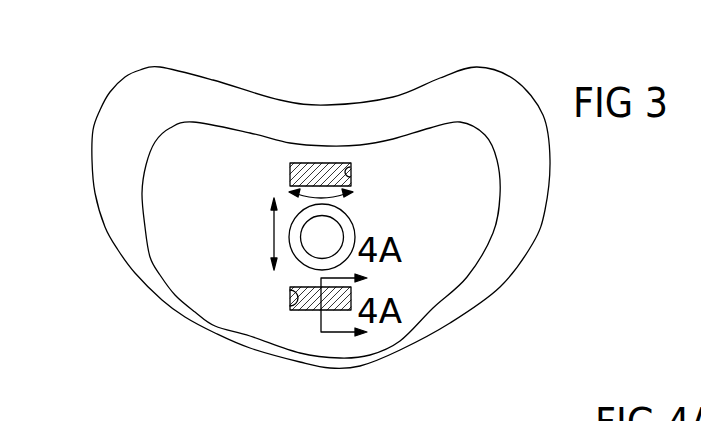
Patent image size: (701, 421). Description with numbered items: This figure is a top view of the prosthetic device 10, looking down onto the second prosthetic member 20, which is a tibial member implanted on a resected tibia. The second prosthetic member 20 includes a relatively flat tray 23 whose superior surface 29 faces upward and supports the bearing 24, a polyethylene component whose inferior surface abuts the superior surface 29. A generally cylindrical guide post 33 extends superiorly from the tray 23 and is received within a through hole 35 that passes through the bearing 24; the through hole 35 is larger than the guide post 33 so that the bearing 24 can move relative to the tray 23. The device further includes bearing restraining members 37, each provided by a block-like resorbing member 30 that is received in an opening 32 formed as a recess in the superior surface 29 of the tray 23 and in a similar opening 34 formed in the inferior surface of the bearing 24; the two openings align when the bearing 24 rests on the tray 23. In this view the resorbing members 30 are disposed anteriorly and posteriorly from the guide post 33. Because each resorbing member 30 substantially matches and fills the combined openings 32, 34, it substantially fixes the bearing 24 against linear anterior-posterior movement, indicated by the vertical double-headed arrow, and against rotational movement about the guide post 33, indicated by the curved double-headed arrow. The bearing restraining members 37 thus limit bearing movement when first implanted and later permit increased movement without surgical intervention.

The prosthetic device 10 is at (308, 190).
The second prosthetic member 20 is at (128, 245).
The tray 23 is at (156, 273).
The bearing 24 is at (157, 157).
The superior surface 29 is at (185, 108).
The resorbing member 30 is at (317, 168).
The opening 32 is at (351, 172).
The opening 34 is at (325, 243).
The guide post 33 is at (338, 226).
The through hole 35 is at (306, 262).
The bearing restraining member 37 is at (296, 152).